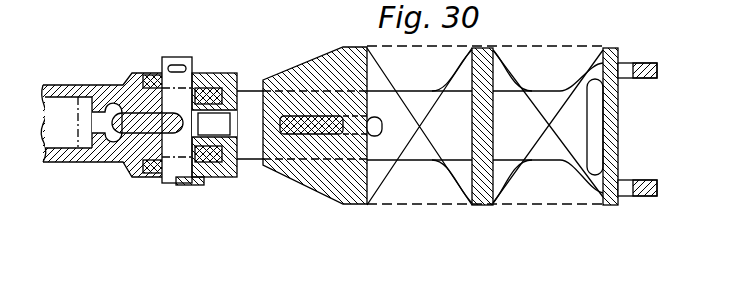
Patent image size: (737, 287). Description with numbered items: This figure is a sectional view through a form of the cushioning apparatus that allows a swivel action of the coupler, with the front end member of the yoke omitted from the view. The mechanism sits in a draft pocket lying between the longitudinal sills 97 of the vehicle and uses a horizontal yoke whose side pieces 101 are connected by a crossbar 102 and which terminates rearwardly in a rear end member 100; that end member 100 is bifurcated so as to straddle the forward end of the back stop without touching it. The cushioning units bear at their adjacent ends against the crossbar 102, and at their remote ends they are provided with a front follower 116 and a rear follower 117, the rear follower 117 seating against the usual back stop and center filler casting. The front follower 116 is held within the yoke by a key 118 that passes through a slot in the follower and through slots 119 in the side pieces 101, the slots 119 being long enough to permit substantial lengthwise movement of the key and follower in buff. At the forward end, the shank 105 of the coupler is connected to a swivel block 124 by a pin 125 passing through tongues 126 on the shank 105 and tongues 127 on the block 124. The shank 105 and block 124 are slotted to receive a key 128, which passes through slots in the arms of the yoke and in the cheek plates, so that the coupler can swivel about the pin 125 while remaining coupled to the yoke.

The longitudinal sills 97 is at (654, 8).
The rear end member 100 is at (658, 71).
The side pieces 101 is at (415, 95).
The crossbar 102 is at (487, 126).
The shank 105 is at (76, 86).
The front follower 116 is at (308, 183).
The rear follower 117 is at (613, 125).
The key 118 is at (303, 116).
The slots 119 is at (371, 129).
The swivel block 124 is at (223, 73).
The pin 125 is at (184, 58).
The tongues 126 is at (157, 160).
The tongues 127 is at (212, 131).
The key 128 is at (100, 185).